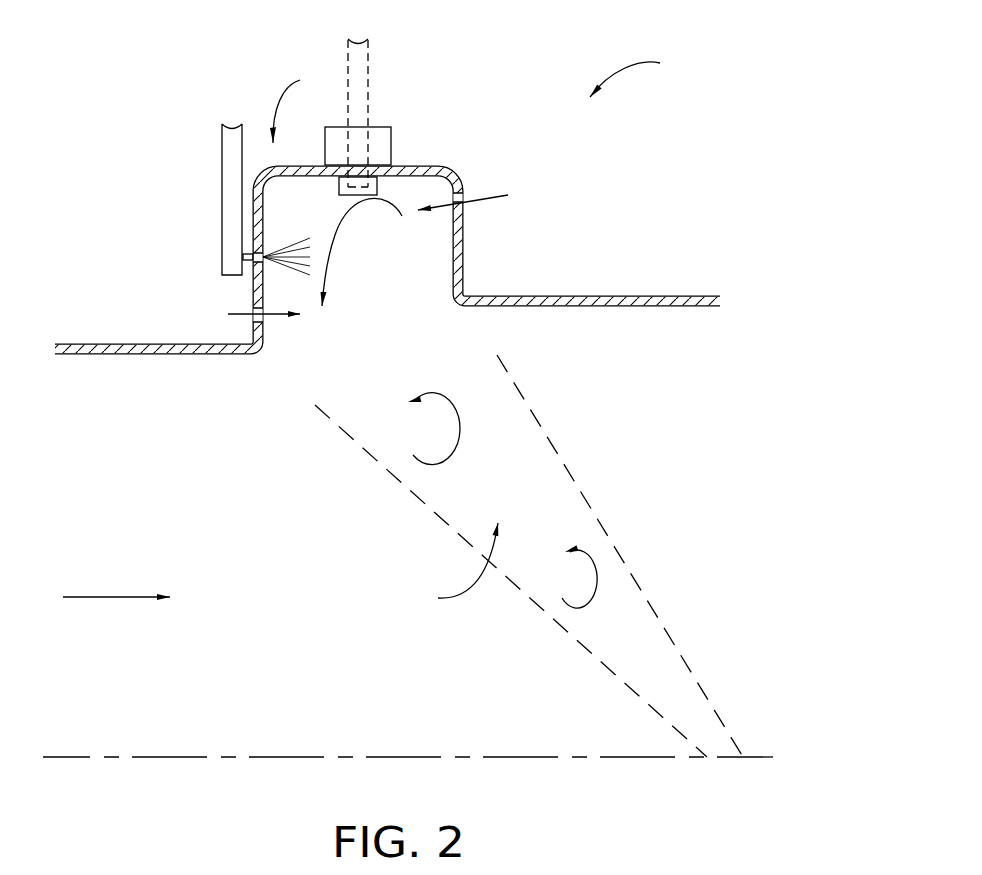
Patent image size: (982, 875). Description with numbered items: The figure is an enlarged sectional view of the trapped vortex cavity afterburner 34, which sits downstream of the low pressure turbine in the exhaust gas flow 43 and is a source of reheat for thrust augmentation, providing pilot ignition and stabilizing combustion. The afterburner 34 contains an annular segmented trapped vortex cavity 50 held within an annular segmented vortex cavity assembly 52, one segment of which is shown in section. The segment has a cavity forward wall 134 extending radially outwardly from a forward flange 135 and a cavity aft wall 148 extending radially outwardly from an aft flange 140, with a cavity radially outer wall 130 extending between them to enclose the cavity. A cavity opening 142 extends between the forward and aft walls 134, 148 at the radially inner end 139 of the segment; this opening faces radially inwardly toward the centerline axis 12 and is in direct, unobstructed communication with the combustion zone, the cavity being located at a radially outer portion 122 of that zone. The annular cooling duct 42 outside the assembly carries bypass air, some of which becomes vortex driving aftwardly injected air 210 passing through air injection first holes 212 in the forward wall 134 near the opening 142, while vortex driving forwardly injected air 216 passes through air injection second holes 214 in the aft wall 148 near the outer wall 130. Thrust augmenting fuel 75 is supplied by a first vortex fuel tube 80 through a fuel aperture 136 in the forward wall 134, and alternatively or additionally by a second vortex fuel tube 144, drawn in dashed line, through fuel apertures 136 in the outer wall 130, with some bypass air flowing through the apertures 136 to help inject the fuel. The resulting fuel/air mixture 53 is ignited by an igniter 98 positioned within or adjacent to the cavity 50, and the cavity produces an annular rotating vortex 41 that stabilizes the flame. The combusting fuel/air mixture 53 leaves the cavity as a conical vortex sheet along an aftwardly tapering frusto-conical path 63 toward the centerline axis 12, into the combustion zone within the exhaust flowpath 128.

The centerline axis 12 is at (610, 757).
The trapped vortex cavity afterburner 34 is at (638, 74).
The annular rotating vortex 41 is at (400, 303).
The annular cooling duct 42 is at (635, 256).
The exhaust gas flow 43 is at (107, 597).
The annular segmented trapped vortex cavity 50 is at (378, 266).
The annular segmented vortex cavity assembly 52 is at (298, 106).
The fuel/air mixture 53 is at (246, 254).
The aftwardly tapering frusto-conical path 63 is at (603, 528).
The thrust augmenting fuel 75 is at (277, 238).
The first vortex fuel tube 80 is at (222, 143).
The igniter 98 is at (392, 130).
The radially outer portion 122 is at (520, 466).
The exhaust flowpath 128 is at (728, 592).
The cavity radially outer wall 130 is at (421, 165).
The cavity forward wall 134 is at (258, 303).
The forward flange 135 is at (202, 355).
The fuel aperture 136 is at (358, 162).
The radially inner end 139 is at (466, 292).
The aft flange 140 is at (635, 307).
The cavity opening 142 is at (435, 300).
The second vortex fuel tube 144 is at (368, 82).
The cavity aft wall 148 is at (465, 243).
The aftwardly injected air 210 is at (272, 318).
The air injection first holes 212 is at (258, 333).
The air injection second holes 214 is at (460, 191).
The forwardly injected air 216 is at (487, 199).